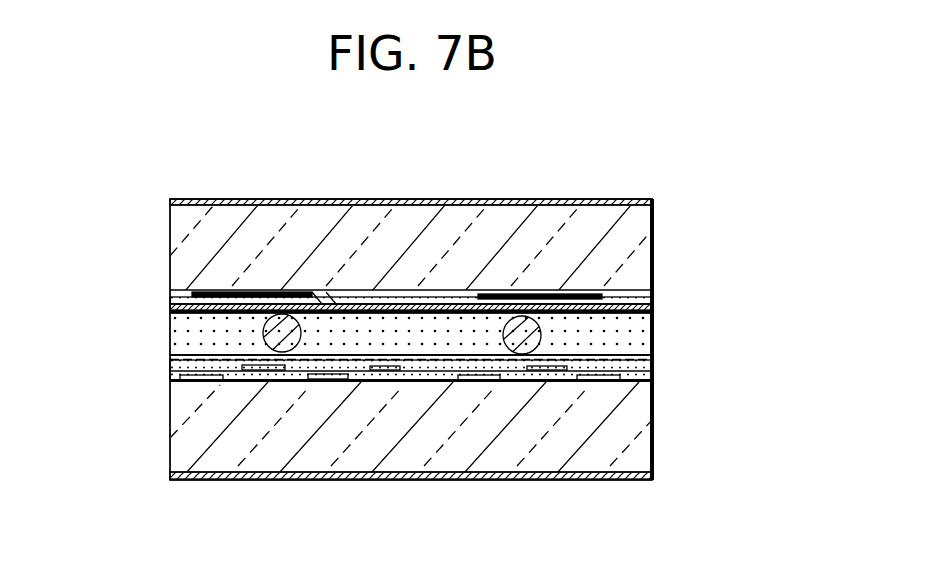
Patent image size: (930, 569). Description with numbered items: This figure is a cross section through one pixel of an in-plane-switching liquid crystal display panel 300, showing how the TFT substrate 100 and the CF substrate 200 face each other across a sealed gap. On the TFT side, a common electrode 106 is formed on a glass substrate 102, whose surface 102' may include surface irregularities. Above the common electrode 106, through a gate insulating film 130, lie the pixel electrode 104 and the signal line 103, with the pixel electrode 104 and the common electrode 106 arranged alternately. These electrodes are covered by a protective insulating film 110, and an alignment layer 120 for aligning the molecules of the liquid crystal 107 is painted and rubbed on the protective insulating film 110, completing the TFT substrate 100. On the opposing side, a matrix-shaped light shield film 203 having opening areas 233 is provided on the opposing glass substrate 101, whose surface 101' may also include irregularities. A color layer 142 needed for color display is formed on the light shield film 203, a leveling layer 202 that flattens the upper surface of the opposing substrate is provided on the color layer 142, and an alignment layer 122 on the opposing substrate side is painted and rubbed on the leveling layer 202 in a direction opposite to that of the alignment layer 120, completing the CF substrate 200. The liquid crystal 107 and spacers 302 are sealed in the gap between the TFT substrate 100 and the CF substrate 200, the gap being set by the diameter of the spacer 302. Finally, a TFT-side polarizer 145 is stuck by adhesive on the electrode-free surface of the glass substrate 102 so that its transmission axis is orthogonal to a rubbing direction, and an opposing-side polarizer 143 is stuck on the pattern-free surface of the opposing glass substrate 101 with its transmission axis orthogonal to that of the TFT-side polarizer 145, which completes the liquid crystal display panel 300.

The liquid crystal display panel 300 is at (433, 199).
The CF substrate 200 is at (657, 205).
The TFT substrate 100 is at (657, 363).
The opposing glass substrate 101 is at (411, 218).
The glass substrate 102 is at (411, 458).
The surface of opposing glass substrate 101' is at (132, 245).
The surface of glass substrate 102' is at (124, 427).
The light shield film 203 is at (236, 292).
The leveling layer 202 is at (316, 300).
The opposing-side polarizer 143 is at (270, 298).
The color layer 142 is at (394, 304).
The opening areas 233 is at (470, 296).
The liquid crystal 107 is at (652, 346).
The alignment layer on opposing substrate side 122 is at (521, 300).
The spacer 302 is at (518, 353).
The signal line 103 is at (560, 372).
The gate insulating film 130 is at (232, 374).
The protective insulating film 110 is at (280, 374).
The pixel electrode 104 is at (343, 372).
The TFT-side polarizer 145 is at (390, 378).
The common electrode 106 is at (463, 376).
The alignment layer on TFT substrate 120 is at (630, 368).